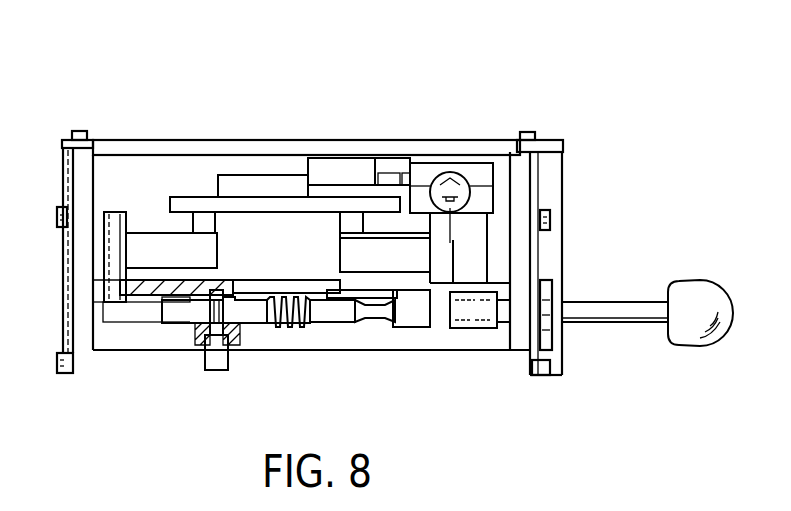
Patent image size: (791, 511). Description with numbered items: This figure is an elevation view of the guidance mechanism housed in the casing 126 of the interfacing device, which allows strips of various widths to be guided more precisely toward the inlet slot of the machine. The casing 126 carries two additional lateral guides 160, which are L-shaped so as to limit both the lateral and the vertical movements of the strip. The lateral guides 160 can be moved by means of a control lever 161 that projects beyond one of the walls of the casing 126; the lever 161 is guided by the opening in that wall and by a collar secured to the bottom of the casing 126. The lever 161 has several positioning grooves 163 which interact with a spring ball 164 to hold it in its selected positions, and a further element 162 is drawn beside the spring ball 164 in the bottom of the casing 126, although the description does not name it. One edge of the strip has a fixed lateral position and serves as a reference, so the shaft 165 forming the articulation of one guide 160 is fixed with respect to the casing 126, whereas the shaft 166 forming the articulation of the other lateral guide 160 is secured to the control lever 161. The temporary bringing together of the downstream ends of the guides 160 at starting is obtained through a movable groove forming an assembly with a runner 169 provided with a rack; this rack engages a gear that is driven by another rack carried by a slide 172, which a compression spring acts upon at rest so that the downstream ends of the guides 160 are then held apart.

The casing 126 is at (146, 110).
The lateral guides 160 is at (355, 259).
The control lever 161 is at (700, 282).
The pin 162 is at (203, 343).
The positioning grooves 163 is at (289, 340).
The spring ball 164 is at (222, 360).
The shaft 165 is at (118, 211).
The shaft 166 is at (447, 242).
The runner 169 is at (270, 183).
The slide 172 is at (462, 175).